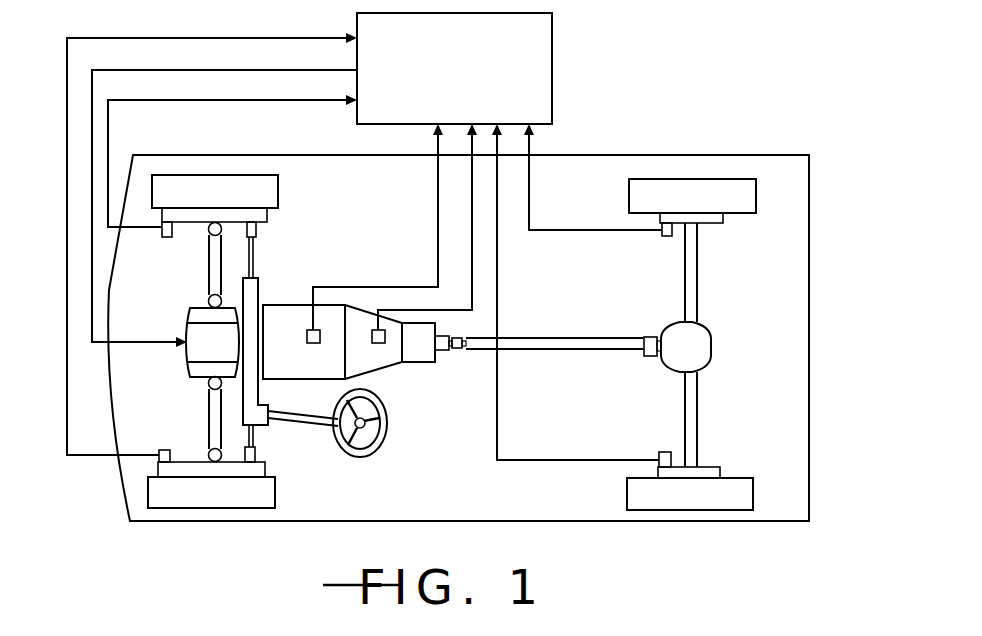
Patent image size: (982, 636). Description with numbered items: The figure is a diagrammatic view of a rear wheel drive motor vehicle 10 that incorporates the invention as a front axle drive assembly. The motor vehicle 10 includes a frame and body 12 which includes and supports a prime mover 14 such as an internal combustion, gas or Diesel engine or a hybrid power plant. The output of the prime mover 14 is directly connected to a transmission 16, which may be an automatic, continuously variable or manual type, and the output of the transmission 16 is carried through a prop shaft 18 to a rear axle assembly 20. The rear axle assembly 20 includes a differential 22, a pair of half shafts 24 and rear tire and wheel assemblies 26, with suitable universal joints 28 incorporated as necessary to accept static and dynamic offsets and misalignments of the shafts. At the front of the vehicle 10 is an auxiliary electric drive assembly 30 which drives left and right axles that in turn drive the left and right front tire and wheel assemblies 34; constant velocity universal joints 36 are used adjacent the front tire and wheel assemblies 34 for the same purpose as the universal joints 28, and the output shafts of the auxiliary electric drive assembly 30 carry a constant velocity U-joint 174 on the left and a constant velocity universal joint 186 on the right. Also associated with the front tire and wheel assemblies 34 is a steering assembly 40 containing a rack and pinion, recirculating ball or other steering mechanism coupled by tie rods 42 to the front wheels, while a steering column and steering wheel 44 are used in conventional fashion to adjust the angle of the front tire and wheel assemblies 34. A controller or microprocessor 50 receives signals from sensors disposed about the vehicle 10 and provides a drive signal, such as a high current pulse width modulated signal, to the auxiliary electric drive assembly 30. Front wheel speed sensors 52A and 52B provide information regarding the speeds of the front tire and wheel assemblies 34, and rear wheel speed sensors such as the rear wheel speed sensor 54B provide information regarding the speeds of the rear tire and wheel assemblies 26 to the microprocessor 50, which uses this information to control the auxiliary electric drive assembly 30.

The motor vehicle 10 is at (710, 96).
The frame and body 12 is at (600, 155).
The prime mover 14 is at (282, 316).
The transmission 16 is at (390, 358).
The prop shaft 18 is at (540, 338).
The rear axle assembly 20 is at (750, 550).
The differential 22 is at (700, 345).
The half shafts 24 is at (697, 275).
The rear tire and wheel assemblies 26 is at (768, 187).
The universal joints 28 is at (458, 352).
The auxiliary electric drive assembly 30 is at (170, 360).
The front tire and wheel assemblies 34 is at (182, 163).
The constant velocity universal joints 36 is at (207, 222).
The steering assembly 40 is at (286, 437).
The tie rods 42 is at (258, 252).
The steering column and steering wheel 44 is at (312, 428).
The controller or microprocessor 50 is at (364, 236).
The front wheel speed sensor 52A is at (157, 458).
The front wheel speed sensor 52B is at (162, 233).
The rear wheel speed sensor 54B is at (665, 238).
The constant velocity U-joint 174 is at (207, 385).
The constant velocity universal joint 186 is at (207, 300).